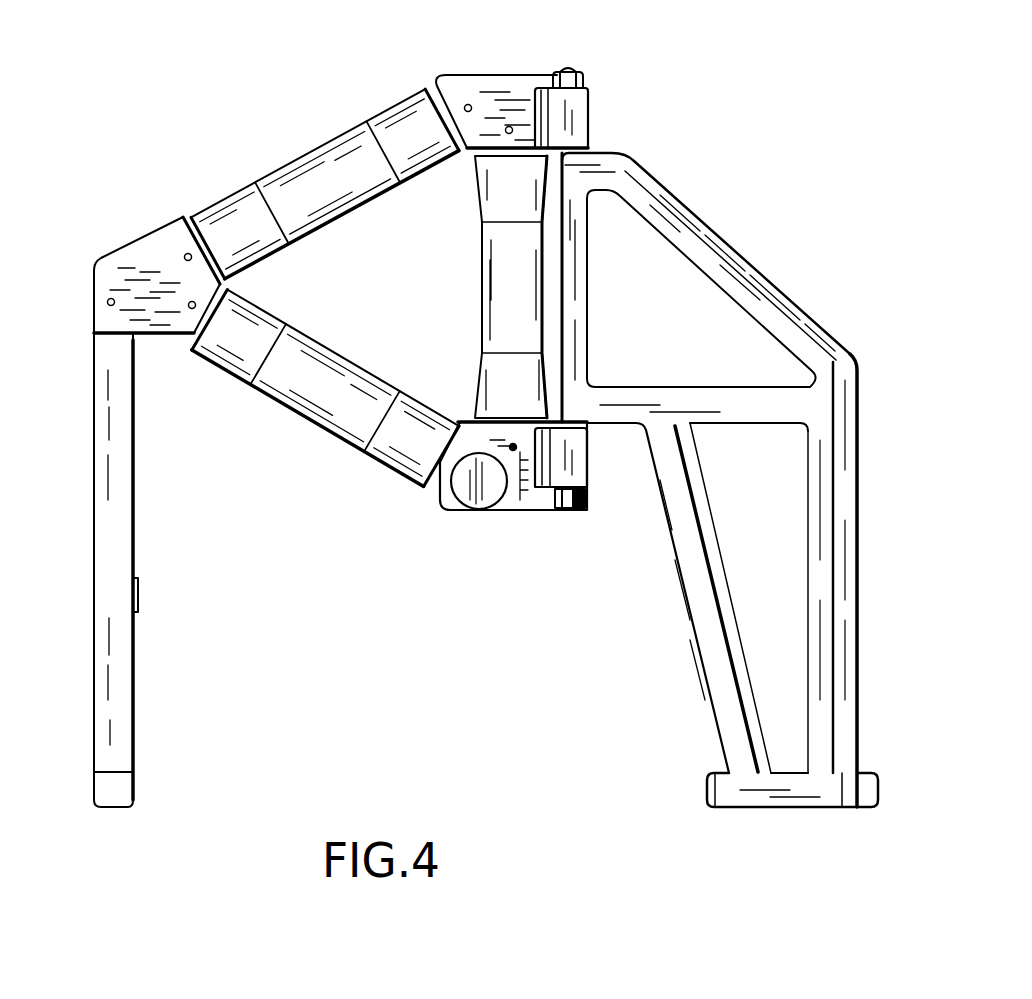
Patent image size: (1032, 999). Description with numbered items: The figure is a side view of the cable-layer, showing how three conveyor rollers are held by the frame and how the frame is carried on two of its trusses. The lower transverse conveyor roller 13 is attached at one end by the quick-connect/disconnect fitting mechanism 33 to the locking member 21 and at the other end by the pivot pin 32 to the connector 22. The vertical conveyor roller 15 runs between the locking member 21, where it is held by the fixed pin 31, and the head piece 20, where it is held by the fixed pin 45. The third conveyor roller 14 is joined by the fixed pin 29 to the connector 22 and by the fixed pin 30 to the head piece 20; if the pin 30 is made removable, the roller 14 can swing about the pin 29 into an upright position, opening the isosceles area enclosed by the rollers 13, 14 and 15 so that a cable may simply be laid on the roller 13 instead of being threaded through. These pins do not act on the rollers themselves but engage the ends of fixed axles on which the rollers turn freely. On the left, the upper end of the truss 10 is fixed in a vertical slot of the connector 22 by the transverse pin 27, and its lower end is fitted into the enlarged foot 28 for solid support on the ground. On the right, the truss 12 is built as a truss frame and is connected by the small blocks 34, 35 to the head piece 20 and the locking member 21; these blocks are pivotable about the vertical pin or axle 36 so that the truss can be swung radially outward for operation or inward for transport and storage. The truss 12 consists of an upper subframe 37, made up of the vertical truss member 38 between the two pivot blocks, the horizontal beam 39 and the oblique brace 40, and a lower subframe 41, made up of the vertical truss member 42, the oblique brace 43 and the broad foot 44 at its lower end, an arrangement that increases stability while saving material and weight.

The truss 10 is at (110, 676).
The truss 12 is at (858, 509).
The lower transverse conveyor roller 13 is at (313, 425).
The third conveyor roller 14 is at (312, 150).
The vertical conveyor roller 15 is at (474, 290).
The head piece 20 is at (513, 86).
The locking member 21 is at (537, 498).
The connector 22 is at (132, 266).
The transverse pin 27 is at (107, 303).
The enlarged foot 28 is at (134, 796).
The fixed pin 29 is at (186, 253).
The fixed pin 30 is at (466, 104).
The fixed pin 31 is at (513, 455).
The pivot pin 32 is at (191, 310).
The quick-connect/disconnect fitting mechanism 33 is at (470, 509).
The small block 34 is at (578, 118).
The small block 35 is at (582, 467).
The pivot pin 36 is at (591, 82).
The upper subframe 37 is at (741, 255).
The vertical truss member 38 is at (581, 328).
The horizontal beam 39 is at (678, 402).
The oblique brace 40 is at (752, 308).
The lower subframe 41 is at (700, 661).
The vertical truss member 42 is at (845, 690).
The oblique brace 43 is at (724, 616).
The broad foot 44 is at (785, 800).
The fixed pin 45 is at (506, 134).